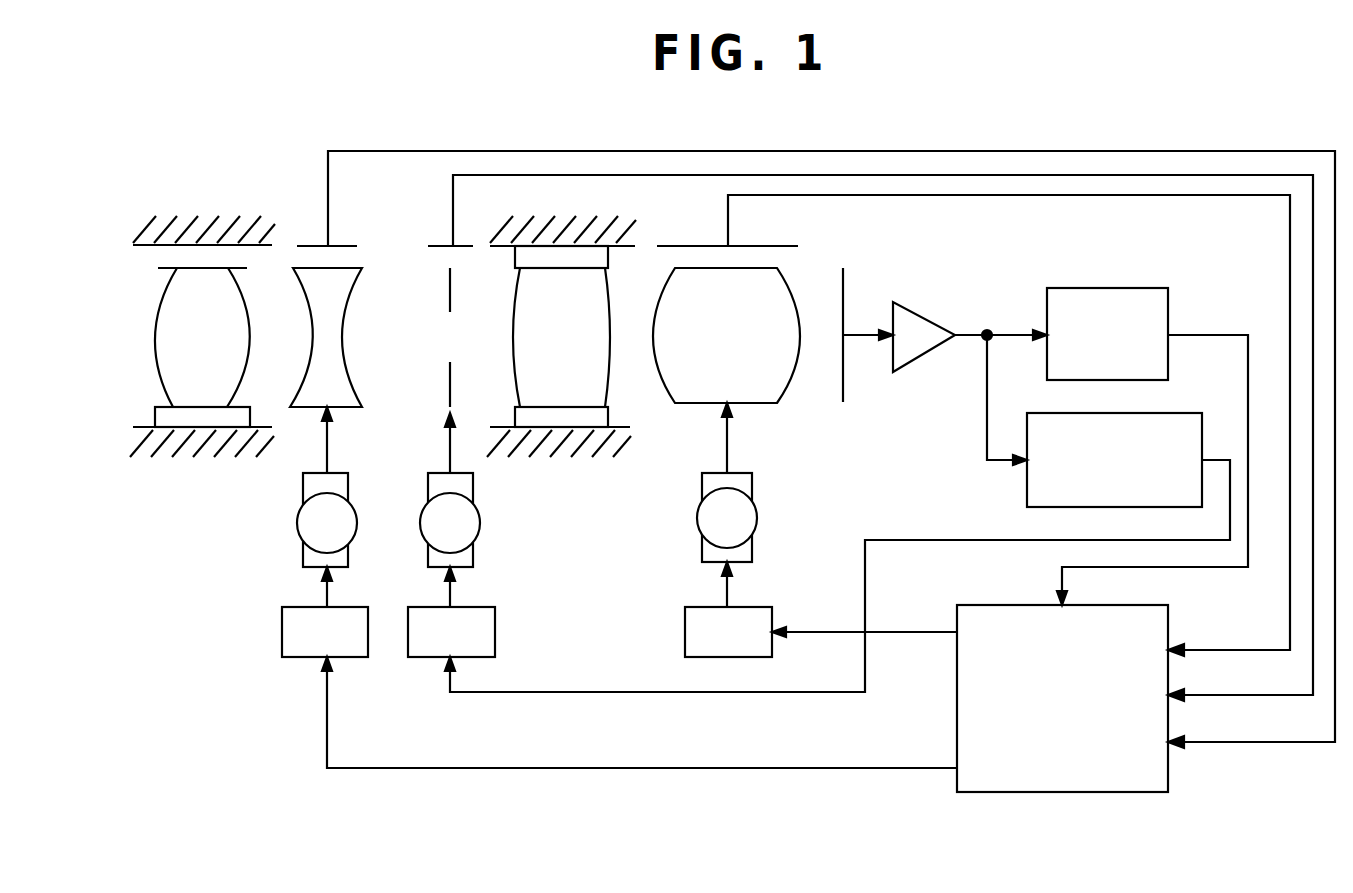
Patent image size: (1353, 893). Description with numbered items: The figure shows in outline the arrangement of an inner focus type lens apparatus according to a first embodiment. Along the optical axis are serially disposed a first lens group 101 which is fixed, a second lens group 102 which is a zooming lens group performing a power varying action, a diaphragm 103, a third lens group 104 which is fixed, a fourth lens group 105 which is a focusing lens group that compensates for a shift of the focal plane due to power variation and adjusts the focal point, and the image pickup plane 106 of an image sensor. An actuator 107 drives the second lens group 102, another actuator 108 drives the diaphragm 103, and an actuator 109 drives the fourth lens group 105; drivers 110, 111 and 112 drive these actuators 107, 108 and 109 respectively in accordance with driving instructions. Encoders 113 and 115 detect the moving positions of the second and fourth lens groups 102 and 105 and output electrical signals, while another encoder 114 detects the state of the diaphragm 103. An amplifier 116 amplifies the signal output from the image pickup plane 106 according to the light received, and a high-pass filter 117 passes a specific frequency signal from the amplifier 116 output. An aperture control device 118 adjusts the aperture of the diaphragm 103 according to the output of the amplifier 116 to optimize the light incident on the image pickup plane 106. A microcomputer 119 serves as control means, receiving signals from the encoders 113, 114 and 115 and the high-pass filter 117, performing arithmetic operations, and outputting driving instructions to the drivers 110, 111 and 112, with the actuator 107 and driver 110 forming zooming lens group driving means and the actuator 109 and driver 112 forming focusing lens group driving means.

The first lens group 101 is at (156, 367).
The second lens group 102 is at (312, 312).
The diaphragm 103 is at (450, 378).
The third lens group 104 is at (609, 352).
The fourth lens group 105 is at (796, 375).
The image pickup plane 106 is at (844, 302).
The actuator 107 is at (302, 523).
The actuator 108 is at (477, 524).
The actuator 109 is at (700, 521).
The driver 110 is at (282, 626).
The driver 111 is at (497, 620).
The driver 112 is at (685, 626).
The encoder 113 is at (346, 243).
The encoder 114 is at (436, 243).
The encoder 115 is at (678, 245).
The amplifier 116 is at (936, 317).
The high-pass filter 117 is at (1146, 288).
The aperture control device 118 is at (1204, 422).
The microcomputer 119 is at (998, 793).